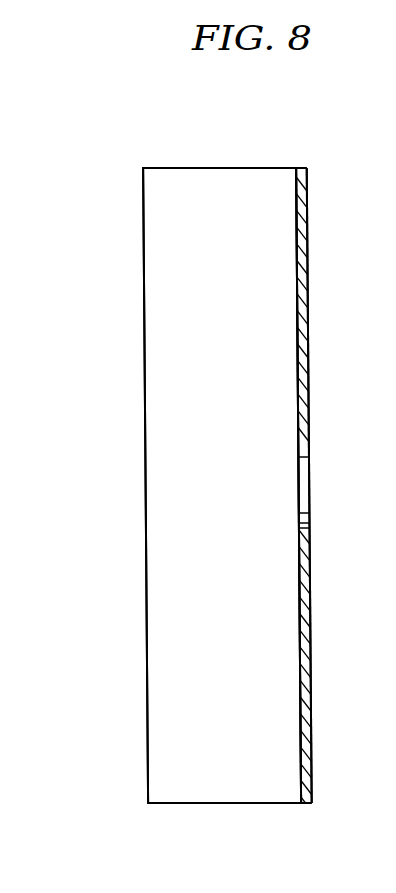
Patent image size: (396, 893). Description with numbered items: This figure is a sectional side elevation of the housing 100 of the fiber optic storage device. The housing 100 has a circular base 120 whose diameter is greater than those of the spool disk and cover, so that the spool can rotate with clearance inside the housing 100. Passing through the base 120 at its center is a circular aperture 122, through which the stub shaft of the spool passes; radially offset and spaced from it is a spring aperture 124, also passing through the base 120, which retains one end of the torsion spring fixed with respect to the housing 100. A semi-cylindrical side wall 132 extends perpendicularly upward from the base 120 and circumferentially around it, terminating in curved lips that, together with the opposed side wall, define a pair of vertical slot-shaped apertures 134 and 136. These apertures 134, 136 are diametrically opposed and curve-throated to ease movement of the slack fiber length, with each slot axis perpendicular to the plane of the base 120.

The housing 100 is at (308, 315).
The circular base 120 is at (302, 399).
The circular aperture 122 is at (306, 462).
The spring aperture 124 is at (306, 526).
The side wall 132 is at (176, 278).
The slotted aperture 134 is at (215, 196).
The slotted aperture 136 is at (218, 778).